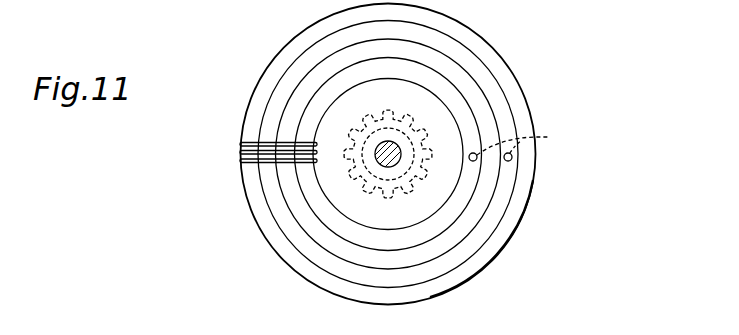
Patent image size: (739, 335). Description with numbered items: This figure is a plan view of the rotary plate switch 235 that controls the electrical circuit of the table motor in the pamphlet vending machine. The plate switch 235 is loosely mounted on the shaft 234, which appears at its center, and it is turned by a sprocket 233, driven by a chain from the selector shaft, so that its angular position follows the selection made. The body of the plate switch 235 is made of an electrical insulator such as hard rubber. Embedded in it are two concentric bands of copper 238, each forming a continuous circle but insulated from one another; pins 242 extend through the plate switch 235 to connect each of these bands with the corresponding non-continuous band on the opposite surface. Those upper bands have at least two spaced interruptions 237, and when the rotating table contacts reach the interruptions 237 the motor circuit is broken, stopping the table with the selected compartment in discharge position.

The sprocket 233 is at (374, 190).
The shaft 234 is at (379, 146).
The rotary plate switch 235 is at (522, 197).
The interruptions 237 is at (240, 160).
The concentric bands of copper 238 is at (462, 115).
The pins 242 is at (524, 145).